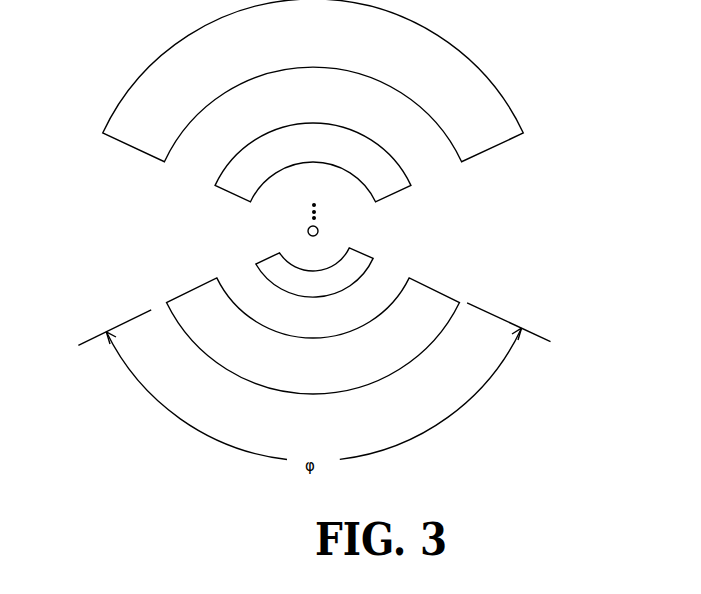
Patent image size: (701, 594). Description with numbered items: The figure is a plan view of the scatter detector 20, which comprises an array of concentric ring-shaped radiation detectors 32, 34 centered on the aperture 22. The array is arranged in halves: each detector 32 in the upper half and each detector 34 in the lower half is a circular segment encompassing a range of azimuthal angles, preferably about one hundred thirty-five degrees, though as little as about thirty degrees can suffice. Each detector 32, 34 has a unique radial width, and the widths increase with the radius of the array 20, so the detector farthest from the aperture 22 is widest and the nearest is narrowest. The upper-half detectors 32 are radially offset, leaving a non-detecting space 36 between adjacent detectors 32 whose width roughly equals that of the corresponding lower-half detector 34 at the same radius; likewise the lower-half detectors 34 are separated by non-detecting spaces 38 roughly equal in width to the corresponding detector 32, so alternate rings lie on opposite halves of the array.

The scatter detector 20 is at (97, 402).
The aperture 22 is at (308, 229).
The radiation detector 32 is at (245, 147).
The radiation detector 34 is at (370, 266).
The non-detecting space 36 is at (407, 130).
The non-detecting space 38 is at (333, 308).